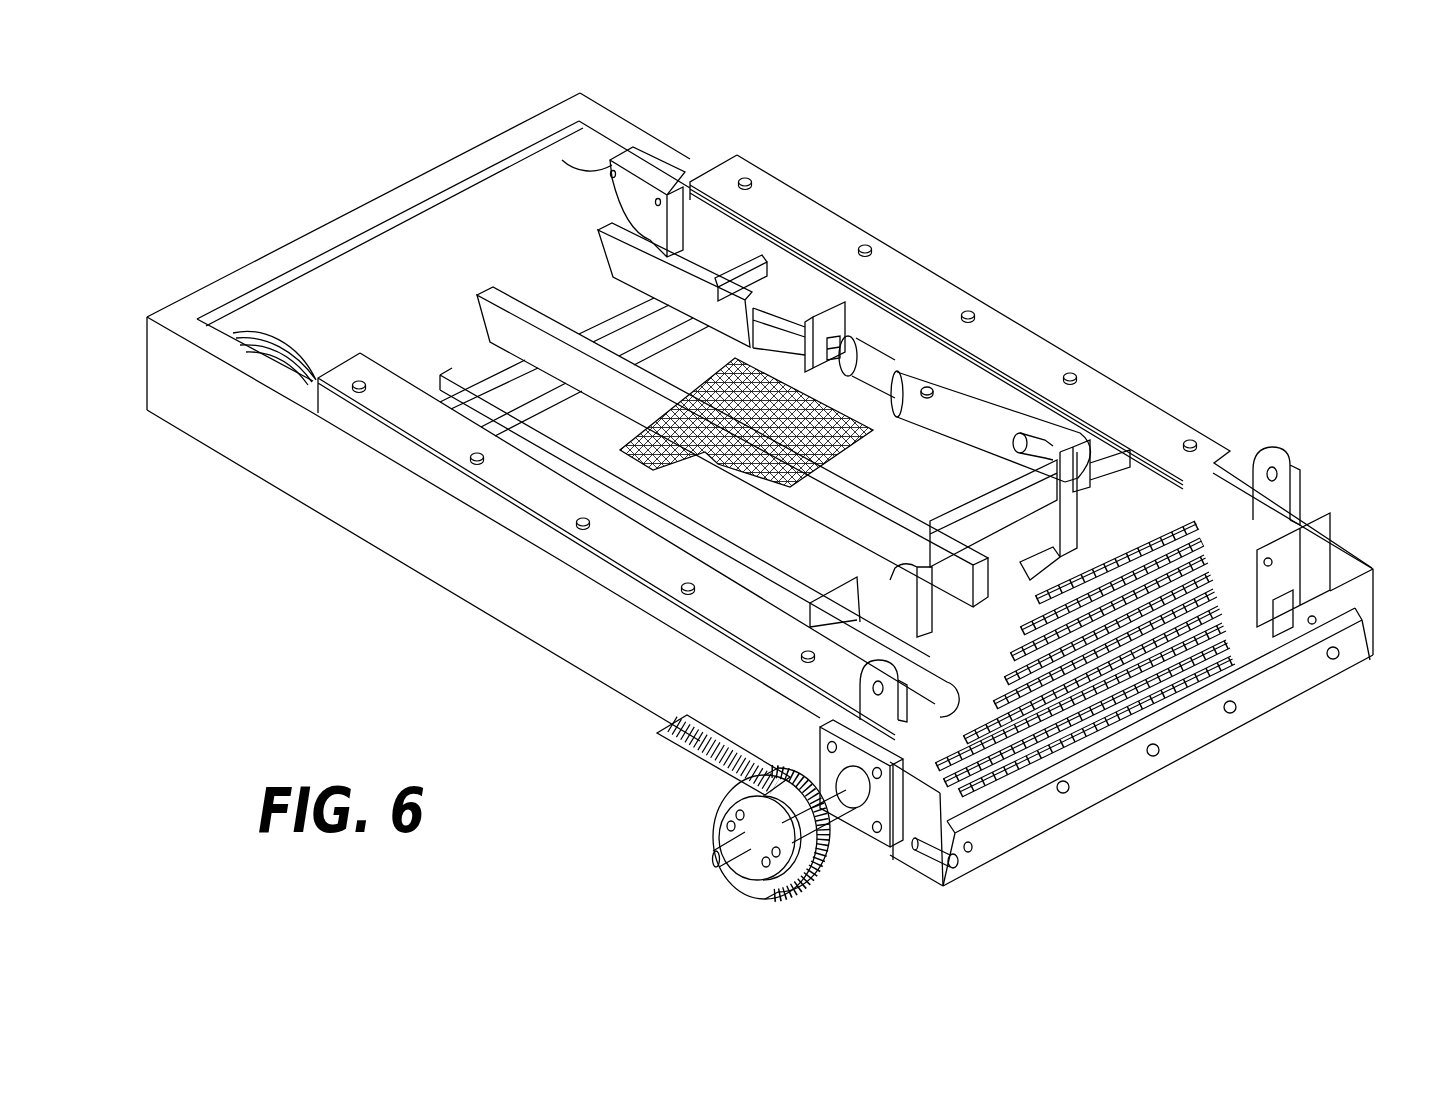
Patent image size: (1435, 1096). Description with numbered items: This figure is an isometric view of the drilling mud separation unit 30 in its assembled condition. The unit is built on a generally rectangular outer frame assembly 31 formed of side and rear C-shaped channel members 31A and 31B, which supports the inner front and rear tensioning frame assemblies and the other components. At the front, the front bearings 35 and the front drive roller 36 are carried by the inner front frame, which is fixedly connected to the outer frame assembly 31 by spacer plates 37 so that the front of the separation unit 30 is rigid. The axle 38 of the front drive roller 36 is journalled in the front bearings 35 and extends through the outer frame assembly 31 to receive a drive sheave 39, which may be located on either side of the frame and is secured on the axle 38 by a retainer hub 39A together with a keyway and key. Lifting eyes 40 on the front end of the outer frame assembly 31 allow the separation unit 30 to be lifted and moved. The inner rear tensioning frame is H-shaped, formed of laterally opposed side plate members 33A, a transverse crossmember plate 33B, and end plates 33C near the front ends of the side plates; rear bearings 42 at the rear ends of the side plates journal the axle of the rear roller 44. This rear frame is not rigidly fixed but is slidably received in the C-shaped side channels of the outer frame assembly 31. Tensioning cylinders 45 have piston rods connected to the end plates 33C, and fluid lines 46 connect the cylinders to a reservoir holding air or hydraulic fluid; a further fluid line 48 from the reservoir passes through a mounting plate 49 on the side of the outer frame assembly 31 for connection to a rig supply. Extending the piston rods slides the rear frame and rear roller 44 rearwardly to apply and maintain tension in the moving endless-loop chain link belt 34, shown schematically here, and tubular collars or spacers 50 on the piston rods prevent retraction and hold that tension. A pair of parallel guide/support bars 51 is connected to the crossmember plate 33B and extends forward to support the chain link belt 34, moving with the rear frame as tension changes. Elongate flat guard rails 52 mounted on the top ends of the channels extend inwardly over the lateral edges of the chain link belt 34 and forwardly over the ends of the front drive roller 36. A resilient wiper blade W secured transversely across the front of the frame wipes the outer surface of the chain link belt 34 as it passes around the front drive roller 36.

The drilling mud separation unit 30 is at (1185, 287).
The outer frame assembly 31 is at (326, 556).
The side C-shaped channel members 31A is at (627, 123).
The rear C-shaped channel member 31B is at (393, 200).
The side plate members 33A is at (842, 295).
The crossmember plate 33B is at (760, 270).
The end plates 33C is at (843, 320).
The endless-loop chain link belt 34 is at (853, 437).
The front bearings 35 is at (1263, 580).
The front drive roller 36 is at (1168, 528).
The spacer plates 37 is at (827, 750).
The axle 38 is at (836, 803).
The drive sheave 39 is at (725, 793).
The retainer hub 39A is at (755, 870).
The lifting eyes 40 is at (857, 705).
The rear bearings 42 is at (653, 177).
The rear roller 44 is at (305, 312).
The tensioning cylinders 45 is at (997, 427).
The fluid lines 46 is at (1090, 467).
The fluid line 48 is at (913, 840).
The mounting plate 49 is at (968, 848).
The tubular collars or spacers 50 is at (877, 367).
The guide/support bars 51 is at (613, 260).
The guard rails 52 is at (393, 393).
The wiper blade W is at (1113, 770).